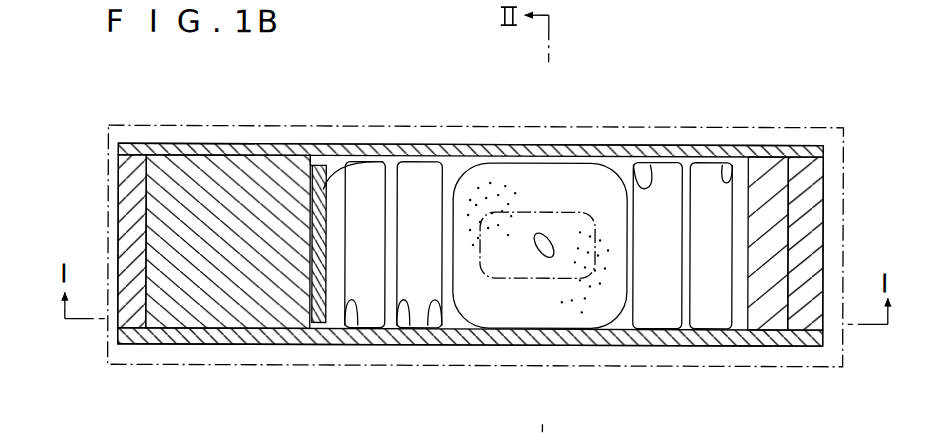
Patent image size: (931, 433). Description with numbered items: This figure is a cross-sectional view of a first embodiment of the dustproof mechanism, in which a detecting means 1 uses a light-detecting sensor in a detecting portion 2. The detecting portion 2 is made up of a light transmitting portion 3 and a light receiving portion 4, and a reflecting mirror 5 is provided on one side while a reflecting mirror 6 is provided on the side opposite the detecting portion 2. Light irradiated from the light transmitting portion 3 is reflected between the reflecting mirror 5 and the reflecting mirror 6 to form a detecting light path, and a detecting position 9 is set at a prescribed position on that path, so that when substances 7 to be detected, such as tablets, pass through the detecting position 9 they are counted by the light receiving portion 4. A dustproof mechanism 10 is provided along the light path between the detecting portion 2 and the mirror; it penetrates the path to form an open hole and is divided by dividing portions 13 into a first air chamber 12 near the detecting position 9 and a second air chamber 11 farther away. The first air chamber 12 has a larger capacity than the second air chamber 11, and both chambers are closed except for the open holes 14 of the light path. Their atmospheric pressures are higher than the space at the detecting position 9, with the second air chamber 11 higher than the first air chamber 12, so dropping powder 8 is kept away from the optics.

The detecting means 1 is at (306, 124).
The detecting portion 2 is at (217, 180).
The light transmitting portion 3 is at (318, 323).
The light receiving portion 4 is at (326, 163).
The reflecting mirror 5 is at (386, 162).
The reflecting mirror 6 is at (800, 165).
The substances to be detected 7 is at (544, 262).
The powder 8 is at (600, 218).
The detecting position 9 is at (487, 312).
The dustproof mechanism 10 is at (433, 172).
The second air chamber 11 is at (734, 185).
The first air chamber 12 is at (666, 164).
The dividing portion 13 is at (690, 180).
The open hole 14 is at (471, 174).